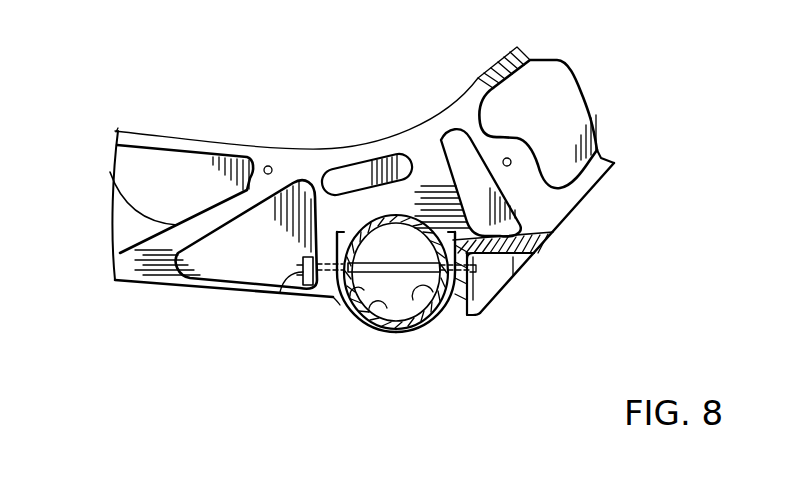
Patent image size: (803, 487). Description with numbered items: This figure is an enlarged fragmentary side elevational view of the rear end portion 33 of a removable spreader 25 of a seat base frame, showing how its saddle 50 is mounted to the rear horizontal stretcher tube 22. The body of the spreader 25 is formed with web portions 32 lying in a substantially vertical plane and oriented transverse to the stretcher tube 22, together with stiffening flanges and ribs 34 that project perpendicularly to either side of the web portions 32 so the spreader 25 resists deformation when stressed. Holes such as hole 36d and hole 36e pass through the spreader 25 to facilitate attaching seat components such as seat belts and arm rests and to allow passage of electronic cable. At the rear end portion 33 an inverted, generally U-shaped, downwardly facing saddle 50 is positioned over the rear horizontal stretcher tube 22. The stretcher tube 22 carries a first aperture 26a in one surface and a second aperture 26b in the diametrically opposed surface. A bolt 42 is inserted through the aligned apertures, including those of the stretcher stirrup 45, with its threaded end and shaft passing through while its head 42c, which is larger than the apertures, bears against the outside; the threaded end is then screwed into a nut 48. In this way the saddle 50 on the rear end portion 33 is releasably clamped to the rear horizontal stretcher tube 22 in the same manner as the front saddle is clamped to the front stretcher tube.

The spreader 25 is at (148, 130).
The rear end portion 33 is at (328, 148).
The stiffening flanges and ribs 34 is at (478, 78).
The web portions 32 is at (553, 117).
The hole 36d is at (268, 166).
The hole 36e is at (511, 162).
The saddle 50 is at (377, 205).
The rear horizontal stretcher tube 22 is at (383, 328).
The first aperture 26a is at (350, 303).
The second aperture 26b is at (423, 318).
The bolt 42 is at (388, 280).
The head 42c is at (472, 278).
The nut 48 is at (300, 270).
The stretcher stirrup 45 is at (354, 317).